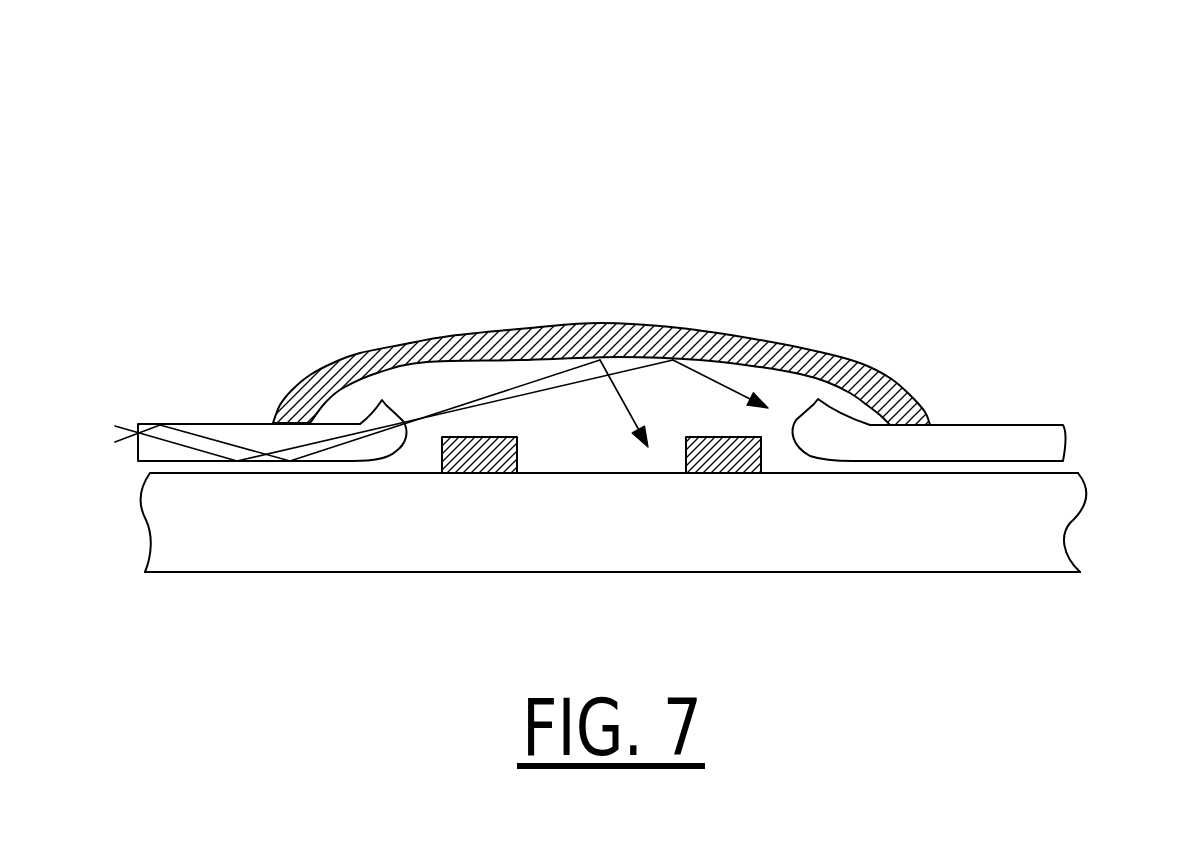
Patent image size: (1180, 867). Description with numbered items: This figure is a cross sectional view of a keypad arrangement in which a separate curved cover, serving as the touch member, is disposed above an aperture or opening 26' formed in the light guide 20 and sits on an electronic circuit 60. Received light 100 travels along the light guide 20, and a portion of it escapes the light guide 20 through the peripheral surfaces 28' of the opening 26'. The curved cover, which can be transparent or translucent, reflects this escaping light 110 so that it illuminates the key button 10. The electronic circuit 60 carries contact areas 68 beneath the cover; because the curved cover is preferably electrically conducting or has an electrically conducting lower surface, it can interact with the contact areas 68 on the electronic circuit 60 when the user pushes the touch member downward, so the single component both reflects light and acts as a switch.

The key button 10 is at (577, 132).
The light guide 20 is at (967, 437).
The aperture or opening 26' is at (601, 334).
The peripheral surfaces 28' is at (612, 377).
The electronic circuit 60 is at (1057, 522).
The contact area 68 is at (678, 449).
The received light 100 is at (115, 423).
The reflected light 110 is at (734, 398).